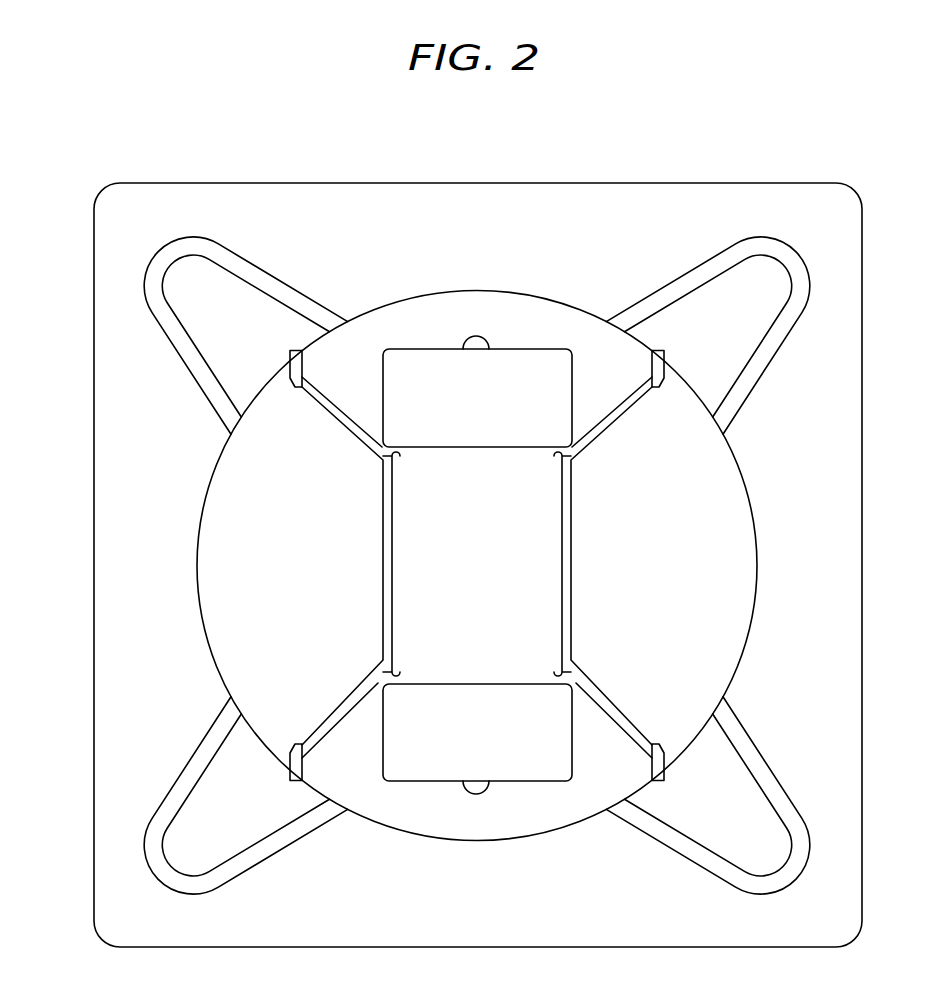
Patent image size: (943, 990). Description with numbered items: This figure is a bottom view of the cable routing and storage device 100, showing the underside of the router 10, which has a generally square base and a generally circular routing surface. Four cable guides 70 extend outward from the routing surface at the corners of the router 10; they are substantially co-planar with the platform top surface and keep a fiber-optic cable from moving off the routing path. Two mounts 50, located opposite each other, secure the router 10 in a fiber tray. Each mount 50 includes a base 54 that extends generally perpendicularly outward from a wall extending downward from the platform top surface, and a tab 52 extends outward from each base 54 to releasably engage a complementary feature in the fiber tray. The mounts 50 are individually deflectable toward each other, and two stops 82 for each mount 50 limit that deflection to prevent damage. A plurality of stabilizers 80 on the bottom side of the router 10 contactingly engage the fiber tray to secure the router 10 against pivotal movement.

The cable routing and storage device 100 is at (136, 158).
The router 10 is at (382, 172).
The mount 50 is at (511, 338).
The tab 52 is at (476, 345).
The base 54 is at (418, 370).
The cable guide 70 is at (231, 293).
The stabilizer 80 is at (302, 366).
The stop 82 is at (400, 457).